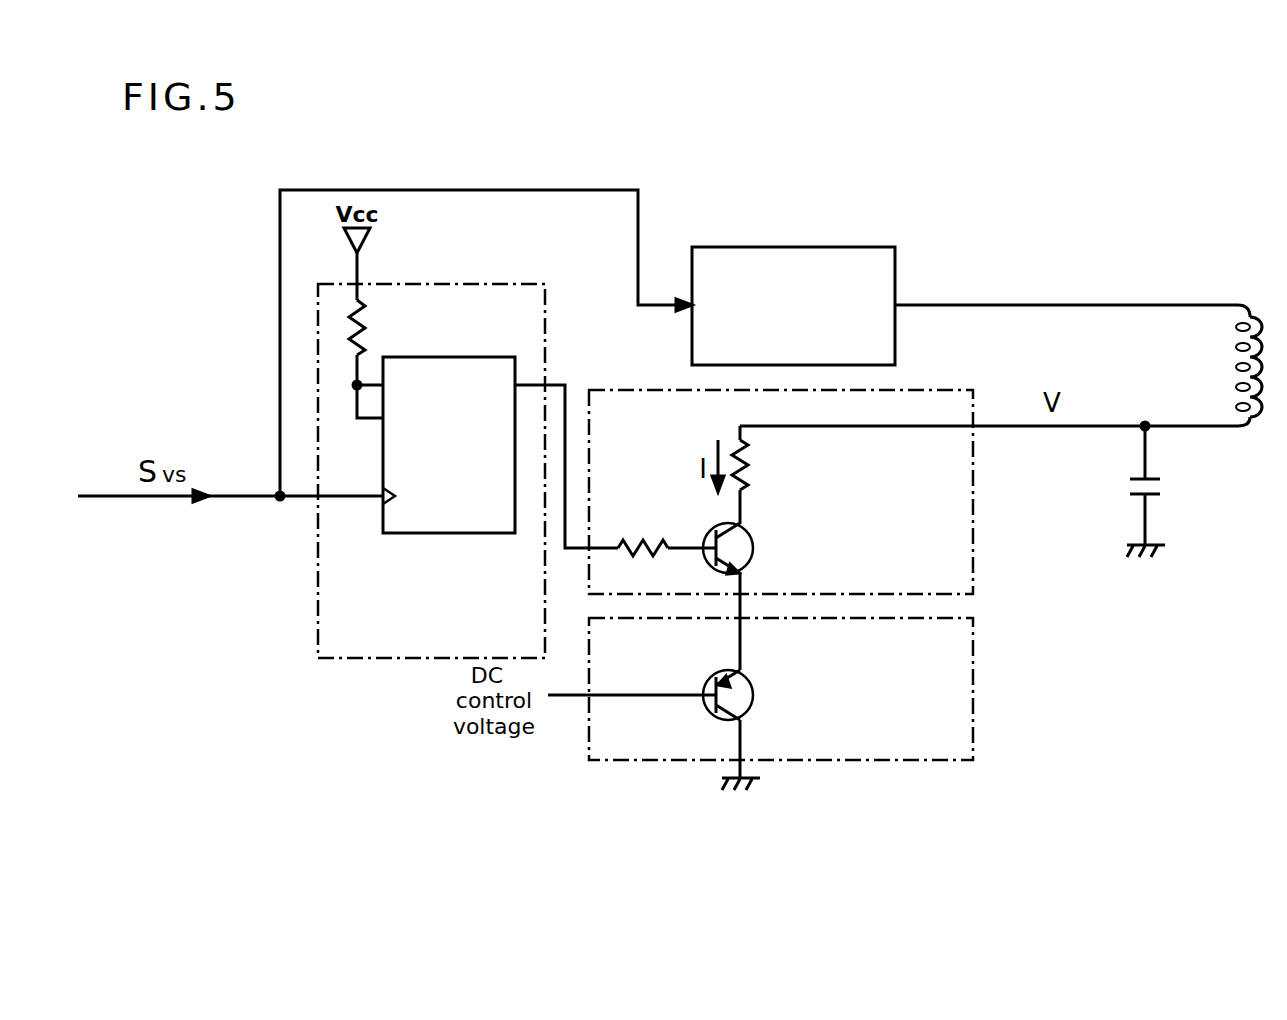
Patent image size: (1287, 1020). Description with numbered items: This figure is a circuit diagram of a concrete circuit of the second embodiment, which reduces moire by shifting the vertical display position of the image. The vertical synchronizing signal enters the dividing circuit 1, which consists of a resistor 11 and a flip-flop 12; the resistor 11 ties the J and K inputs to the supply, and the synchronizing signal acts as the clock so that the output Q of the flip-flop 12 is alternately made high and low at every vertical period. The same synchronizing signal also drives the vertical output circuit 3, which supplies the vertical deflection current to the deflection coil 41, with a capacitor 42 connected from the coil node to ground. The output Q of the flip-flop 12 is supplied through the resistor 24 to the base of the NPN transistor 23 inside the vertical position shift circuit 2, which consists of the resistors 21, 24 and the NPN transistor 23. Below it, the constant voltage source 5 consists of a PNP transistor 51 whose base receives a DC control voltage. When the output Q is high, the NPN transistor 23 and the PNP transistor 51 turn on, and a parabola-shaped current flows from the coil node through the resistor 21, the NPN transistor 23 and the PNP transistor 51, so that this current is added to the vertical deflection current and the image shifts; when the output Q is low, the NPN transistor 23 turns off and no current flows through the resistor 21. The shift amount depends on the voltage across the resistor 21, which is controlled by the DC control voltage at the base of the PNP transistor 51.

The dividing circuit 1 is at (318, 578).
The resistor 11 is at (368, 333).
The flip-flop 12 is at (481, 357).
The vertical position shift circuit 2 is at (973, 568).
The resistor 21 is at (757, 478).
The NPN transistor 23 is at (754, 548).
The resistor 24 is at (648, 538).
The vertical output circuit 3 is at (807, 247).
The deflection coil 41 is at (1236, 352).
The capacitor 42 is at (1162, 488).
The constant voltage source 5 is at (973, 740).
The PNP transistor 51 is at (754, 695).